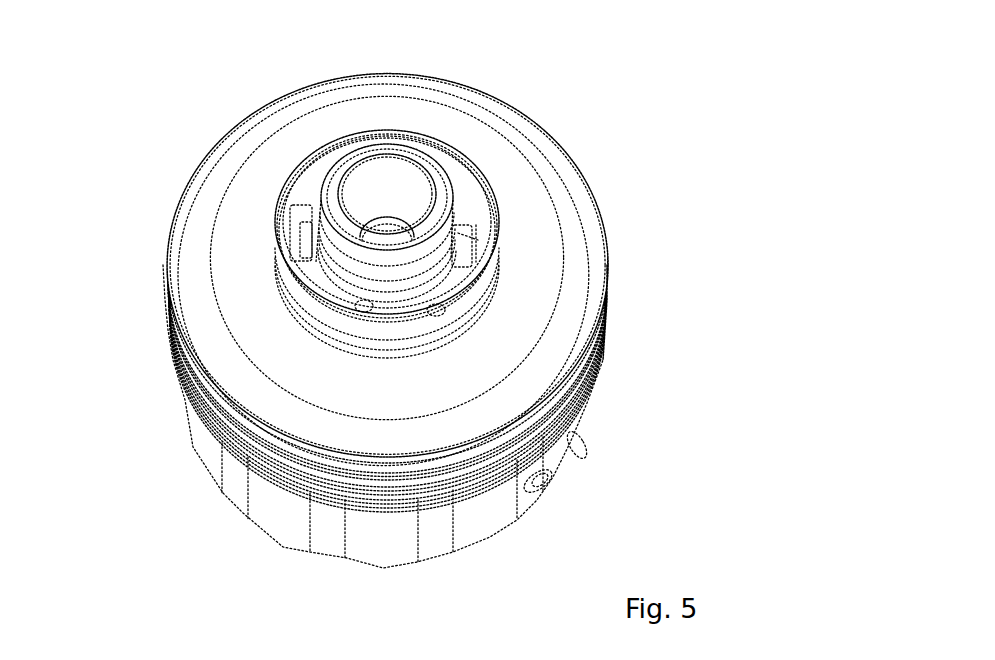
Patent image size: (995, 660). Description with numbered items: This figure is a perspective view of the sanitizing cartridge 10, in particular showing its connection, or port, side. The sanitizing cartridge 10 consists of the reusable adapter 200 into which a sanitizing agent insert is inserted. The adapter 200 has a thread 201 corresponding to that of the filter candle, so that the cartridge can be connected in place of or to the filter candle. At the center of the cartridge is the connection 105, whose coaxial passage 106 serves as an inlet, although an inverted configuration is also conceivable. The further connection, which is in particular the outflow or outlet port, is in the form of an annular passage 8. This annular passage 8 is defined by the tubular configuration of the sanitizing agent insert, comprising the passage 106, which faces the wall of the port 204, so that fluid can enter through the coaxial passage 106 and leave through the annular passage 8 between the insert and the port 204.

The sanitizing cartridge 10 is at (402, 311).
The adapter 200 is at (210, 458).
The thread 201 is at (583, 377).
The port 204 is at (483, 242).
The annular passage 8 is at (465, 217).
The connection 105 is at (440, 203).
The coaxial passage 106 is at (370, 167).